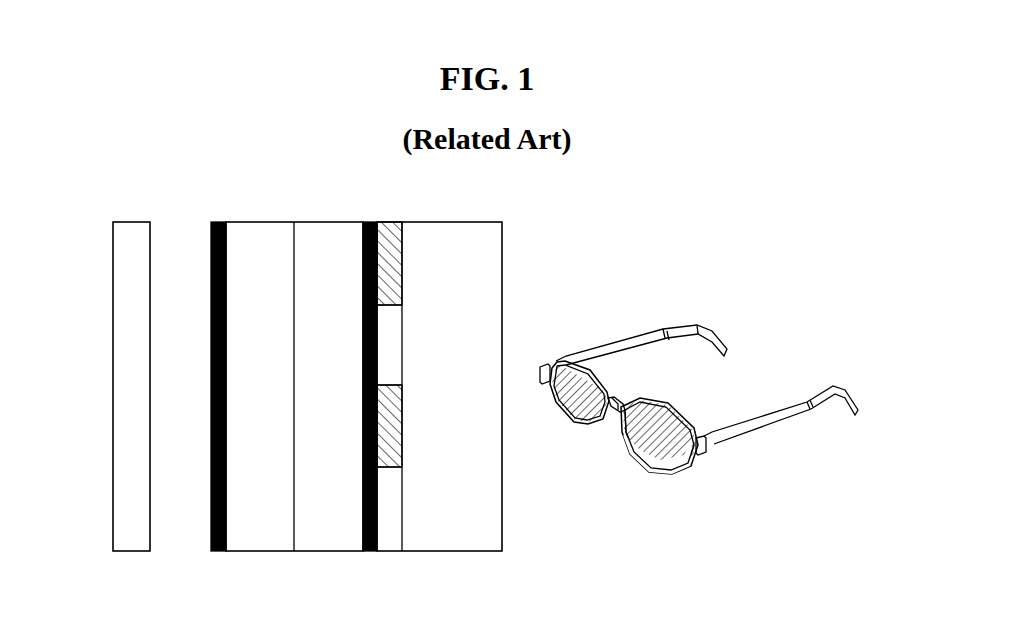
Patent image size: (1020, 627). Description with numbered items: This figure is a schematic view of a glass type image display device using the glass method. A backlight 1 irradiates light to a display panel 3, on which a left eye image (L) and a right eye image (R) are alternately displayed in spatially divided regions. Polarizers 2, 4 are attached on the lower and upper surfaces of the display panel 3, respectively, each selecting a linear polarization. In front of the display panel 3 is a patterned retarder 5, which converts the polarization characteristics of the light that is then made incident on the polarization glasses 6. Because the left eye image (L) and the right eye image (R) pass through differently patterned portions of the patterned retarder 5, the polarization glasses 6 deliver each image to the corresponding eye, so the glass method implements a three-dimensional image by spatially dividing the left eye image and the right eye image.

The backlight 1 is at (131, 553).
The polarizer 2 is at (218, 553).
The display panel 3 is at (362, 572).
The polarizer 4 is at (371, 553).
The patterned retarder 5 is at (502, 572).
The polarization glasses 6 is at (627, 345).